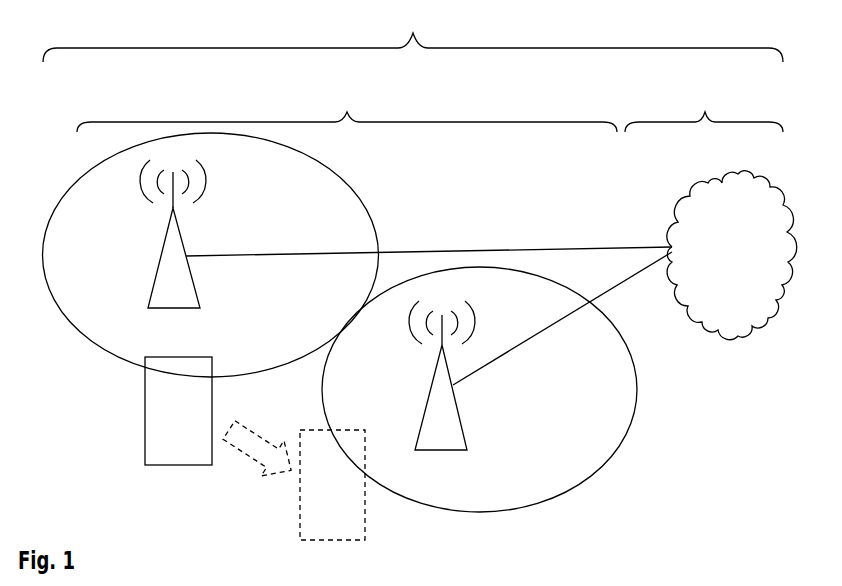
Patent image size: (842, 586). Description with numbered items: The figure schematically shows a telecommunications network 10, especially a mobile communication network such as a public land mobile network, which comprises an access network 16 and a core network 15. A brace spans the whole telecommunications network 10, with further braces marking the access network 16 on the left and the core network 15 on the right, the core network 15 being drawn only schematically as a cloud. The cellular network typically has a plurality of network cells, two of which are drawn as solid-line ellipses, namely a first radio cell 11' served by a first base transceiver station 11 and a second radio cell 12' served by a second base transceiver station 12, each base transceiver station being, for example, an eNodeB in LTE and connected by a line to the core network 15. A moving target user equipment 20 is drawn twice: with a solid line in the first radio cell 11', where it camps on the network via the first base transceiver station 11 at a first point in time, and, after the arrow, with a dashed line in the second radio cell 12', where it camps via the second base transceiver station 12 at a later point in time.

The telecommunications network 10 is at (413, 35).
The access network 16 is at (347, 111).
The core network 15 is at (711, 215).
The first base transceiver station 11 is at (406, 234).
The first radio cell 11' is at (211, 261).
The second base transceiver station 12 is at (540, 351).
The second radio cell 12' is at (505, 389).
The target user equipment 20 is at (255, 448).